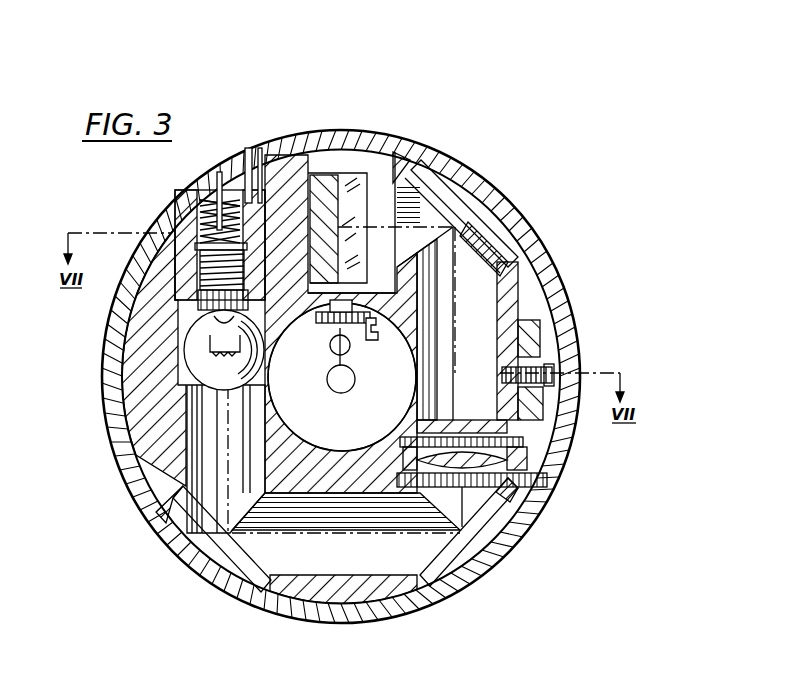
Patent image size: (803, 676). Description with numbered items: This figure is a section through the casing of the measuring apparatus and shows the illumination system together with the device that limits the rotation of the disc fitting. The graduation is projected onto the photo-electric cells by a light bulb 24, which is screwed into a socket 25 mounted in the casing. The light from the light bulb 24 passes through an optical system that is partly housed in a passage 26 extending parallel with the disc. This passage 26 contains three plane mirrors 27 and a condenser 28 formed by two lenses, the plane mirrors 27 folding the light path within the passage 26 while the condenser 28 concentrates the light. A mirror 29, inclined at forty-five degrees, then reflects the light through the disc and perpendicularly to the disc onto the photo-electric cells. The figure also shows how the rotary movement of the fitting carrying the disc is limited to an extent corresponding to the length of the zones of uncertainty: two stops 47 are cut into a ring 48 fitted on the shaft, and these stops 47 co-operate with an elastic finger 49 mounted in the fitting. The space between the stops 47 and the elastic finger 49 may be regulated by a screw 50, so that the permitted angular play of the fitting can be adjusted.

The light bulb 24 is at (236, 378).
The socket 25 is at (190, 217).
The passage 26 is at (307, 567).
The plane mirrors 27 is at (452, 200).
The condenser 28 is at (463, 466).
The mirror 29 is at (348, 182).
The stops 47 is at (352, 300).
The ring 48 is at (300, 423).
The elastic finger 49 is at (342, 377).
The screw 50 is at (370, 336).